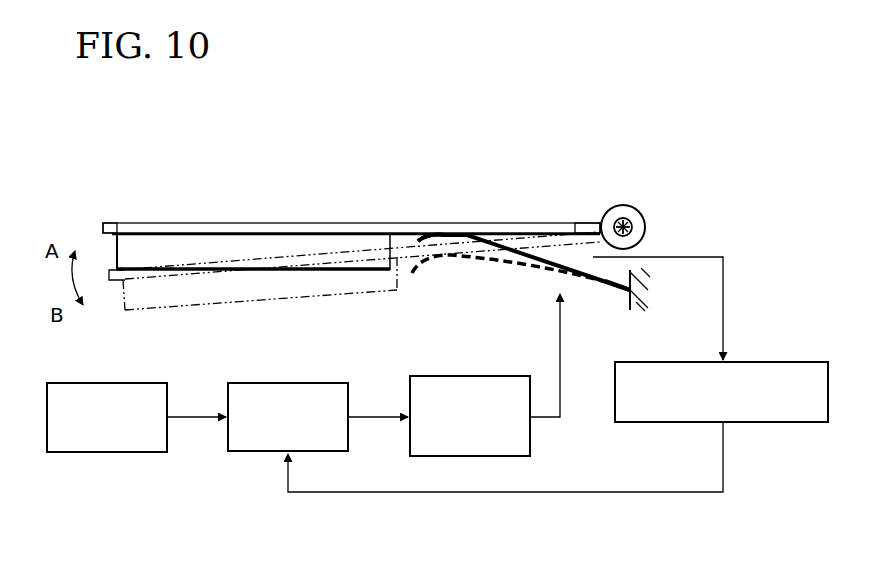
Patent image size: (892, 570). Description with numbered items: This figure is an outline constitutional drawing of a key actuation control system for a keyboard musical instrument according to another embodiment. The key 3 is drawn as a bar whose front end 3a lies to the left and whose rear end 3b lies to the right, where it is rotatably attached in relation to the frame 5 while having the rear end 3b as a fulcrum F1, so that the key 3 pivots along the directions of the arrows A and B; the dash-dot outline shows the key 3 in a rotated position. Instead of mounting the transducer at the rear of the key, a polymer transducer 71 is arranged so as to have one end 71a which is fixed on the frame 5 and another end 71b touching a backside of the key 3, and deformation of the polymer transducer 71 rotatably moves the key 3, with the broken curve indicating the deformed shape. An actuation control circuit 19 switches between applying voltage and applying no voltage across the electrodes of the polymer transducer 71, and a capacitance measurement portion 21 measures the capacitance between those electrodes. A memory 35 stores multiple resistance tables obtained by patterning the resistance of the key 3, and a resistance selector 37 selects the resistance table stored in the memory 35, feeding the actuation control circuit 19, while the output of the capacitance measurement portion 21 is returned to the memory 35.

The key 3 is at (260, 257).
The one end of plate 3a is at (110, 223).
The rear end of the key 3b is at (585, 222).
The fulcrum F1 is at (627, 213).
The polymer transducer 71 is at (545, 258).
The one end of the polymer transducer 71a is at (606, 276).
The another end of the polymer transducer 71b is at (417, 243).
The frame 5 is at (642, 308).
The actuation control circuit 19 is at (507, 376).
The capacitance measurement portion 21 is at (787, 362).
The memory 35 is at (253, 451).
The resistance selector 37 is at (108, 452).